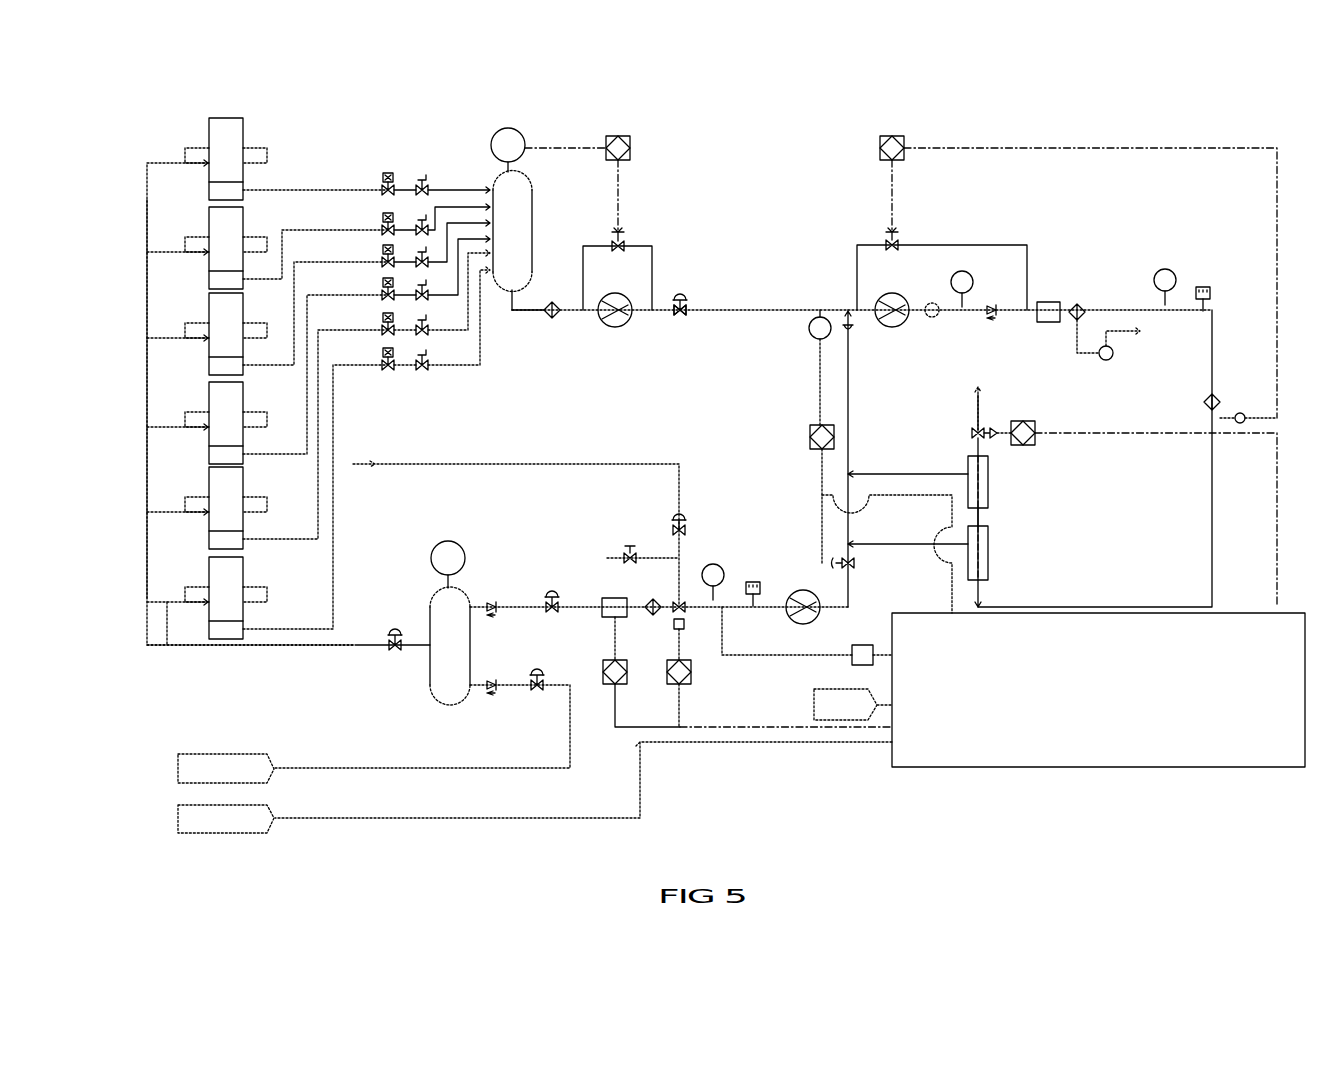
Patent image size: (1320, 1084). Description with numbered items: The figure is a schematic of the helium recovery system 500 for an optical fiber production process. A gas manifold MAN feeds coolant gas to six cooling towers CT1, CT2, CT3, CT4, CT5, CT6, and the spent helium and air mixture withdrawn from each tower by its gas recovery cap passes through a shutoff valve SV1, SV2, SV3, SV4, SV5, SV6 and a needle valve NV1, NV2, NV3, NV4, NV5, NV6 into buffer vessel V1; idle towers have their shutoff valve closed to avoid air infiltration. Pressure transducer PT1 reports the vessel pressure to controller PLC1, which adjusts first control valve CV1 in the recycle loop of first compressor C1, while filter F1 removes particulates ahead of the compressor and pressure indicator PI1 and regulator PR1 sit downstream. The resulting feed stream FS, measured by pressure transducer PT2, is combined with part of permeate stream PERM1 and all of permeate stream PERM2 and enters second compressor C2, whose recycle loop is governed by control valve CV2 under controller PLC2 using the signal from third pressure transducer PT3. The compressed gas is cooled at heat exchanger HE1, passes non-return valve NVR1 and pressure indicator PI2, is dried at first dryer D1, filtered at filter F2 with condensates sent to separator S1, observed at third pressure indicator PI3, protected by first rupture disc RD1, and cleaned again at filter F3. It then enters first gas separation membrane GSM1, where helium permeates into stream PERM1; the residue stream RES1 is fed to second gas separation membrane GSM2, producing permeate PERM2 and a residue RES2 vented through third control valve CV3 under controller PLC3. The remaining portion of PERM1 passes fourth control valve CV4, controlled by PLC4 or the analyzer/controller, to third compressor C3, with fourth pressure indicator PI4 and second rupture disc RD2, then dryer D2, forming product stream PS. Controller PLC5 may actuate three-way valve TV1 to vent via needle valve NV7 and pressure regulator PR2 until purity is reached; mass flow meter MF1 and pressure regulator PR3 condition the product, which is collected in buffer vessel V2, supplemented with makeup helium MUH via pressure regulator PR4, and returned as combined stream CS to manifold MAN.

The cooling tower CT1 is at (237, 165).
The cooling tower CT2 is at (237, 254).
The cooling tower CT3 is at (237, 340).
The cooling tower CT4 is at (237, 429).
The cooling tower CT5 is at (237, 514).
The cooling tower CT6 is at (237, 604).
The gas manifold MAN is at (147, 372).
The shutoff valve SV1 is at (386, 180).
The shutoff valve SV2 is at (386, 222).
The shutoff valve SV3 is at (386, 255).
The shutoff valve SV4 is at (386, 288).
The shutoff valve SV5 is at (386, 318).
The shutoff valve SV6 is at (385, 353).
The needle valve NV1 is at (420, 180).
The needle valve NV2 is at (426, 222).
The needle valve NV3 is at (420, 256).
The needle valve NV4 is at (427, 287).
The needle valve NV5 is at (427, 321).
The needle valve NV6 is at (427, 356).
The needle valve NV7 is at (632, 552).
The buffer vessel V1 is at (514, 213).
The pressure transducer PT1 is at (514, 140).
The programmable logic controller PLC1 is at (621, 137).
The feed stream FS is at (722, 310).
The filter F1 is at (554, 320).
The first compressor C1 is at (616, 328).
The first control valve CV1 is at (626, 232).
The pressure indicator PI1 is at (681, 296).
The pressure regulator 1 PR1 is at (681, 320).
The pressure transducer PT2 is at (815, 337).
The programmable logic controller PLC4 is at (810, 437).
The fourth control valve CV4 is at (832, 585).
The programmable logic controller PLC2 is at (883, 138).
The second control valve CV2 is at (898, 235).
The second compressor C2 is at (882, 304).
The heat exchanger HE1 is at (929, 320).
The non-return valve 1 NVR1 is at (989, 320).
The pressure indicator 2 PI2 is at (964, 270).
The first dryer D1 is at (1046, 300).
The filter F2 is at (1082, 305).
The separator S1 is at (1108, 360).
The third pressure indicator PI3 is at (1163, 268).
The first rupture disc RD1 is at (1212, 290).
The filter F3 is at (1218, 400).
The third pressure transducer PT3 is at (1242, 425).
The restrictor 2 RES2 is at (976, 412).
The third control valve CV3 is at (982, 428).
The programmable logic controller PLC3 is at (1037, 430).
The second gas separation membrane GSM2 is at (986, 482).
The residue stream RES1 is at (986, 515).
The first gas separation membrane GSM1 is at (986, 544).
The permeate stream PERM2 is at (926, 448).
The permeate stream PERM1 is at (912, 523).
The third compressor C3 is at (790, 602).
The fourth pressure indicator PI4 is at (720, 565).
The second rupture disc RD2 is at (752, 582).
The three-way valve TV1 is at (681, 598).
The mass flow meter MF1 is at (607, 597).
The pressure regulator PR3 is at (553, 594).
The product stream PS is at (516, 605).
The pressure regulator PR2 is at (681, 516).
The controller PLC5 is at (683, 672).
The dryer 2 D2 is at (866, 643).
The buffer vessel V2 is at (445, 655).
The pressure regulator PR4 is at (540, 697).
The makeup helium MUH is at (222, 768).
The combined stream CS is at (282, 650).
The system 500 is at (1189, 872).